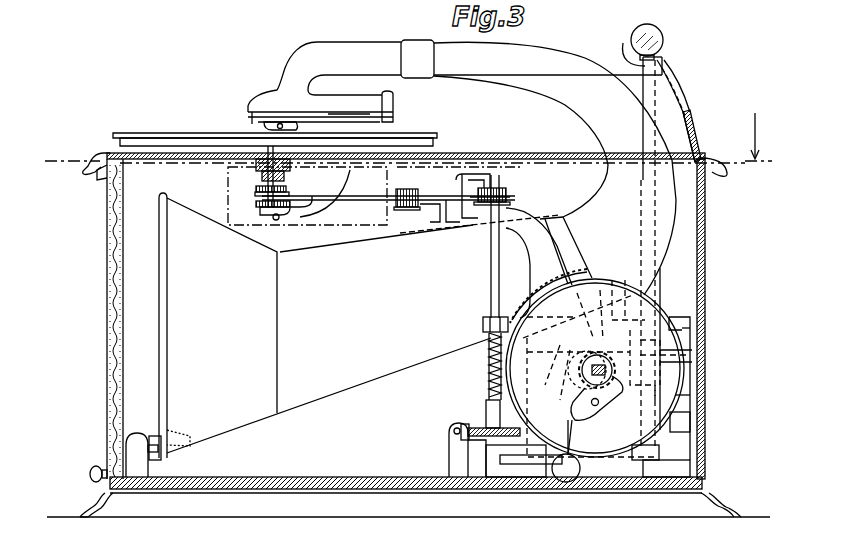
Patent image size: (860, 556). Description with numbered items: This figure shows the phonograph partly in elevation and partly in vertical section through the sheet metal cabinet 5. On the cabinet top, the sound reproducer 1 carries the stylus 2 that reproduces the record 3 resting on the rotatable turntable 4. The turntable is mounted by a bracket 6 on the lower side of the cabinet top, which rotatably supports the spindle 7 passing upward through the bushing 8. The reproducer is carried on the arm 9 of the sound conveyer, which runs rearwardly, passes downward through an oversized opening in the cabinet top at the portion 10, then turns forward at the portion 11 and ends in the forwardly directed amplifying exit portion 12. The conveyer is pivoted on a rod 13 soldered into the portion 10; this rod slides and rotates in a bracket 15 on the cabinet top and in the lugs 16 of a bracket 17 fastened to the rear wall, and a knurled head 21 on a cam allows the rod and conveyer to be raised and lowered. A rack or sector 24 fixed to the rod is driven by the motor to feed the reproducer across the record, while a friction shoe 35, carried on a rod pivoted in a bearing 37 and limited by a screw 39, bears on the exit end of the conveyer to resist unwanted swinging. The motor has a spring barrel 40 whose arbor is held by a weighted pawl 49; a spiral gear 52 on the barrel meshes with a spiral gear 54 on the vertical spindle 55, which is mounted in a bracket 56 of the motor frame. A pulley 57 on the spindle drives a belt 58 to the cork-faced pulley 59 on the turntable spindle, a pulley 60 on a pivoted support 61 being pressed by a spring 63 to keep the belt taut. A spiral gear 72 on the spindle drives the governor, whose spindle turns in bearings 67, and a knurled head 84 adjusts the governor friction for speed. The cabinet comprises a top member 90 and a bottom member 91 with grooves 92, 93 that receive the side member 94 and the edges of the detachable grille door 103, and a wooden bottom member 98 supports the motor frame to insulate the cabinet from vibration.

The sound reproducer 1 is at (248, 104).
The stylus 2 is at (263, 126).
The record 3 is at (148, 133).
The turntable 4 is at (401, 141).
The cabinet 5 is at (492, 153).
The bracket 6 is at (262, 210).
The spindle 7 is at (268, 182).
The bushing 8 is at (258, 170).
The arm of the sound conveyer 9 is at (432, 40).
The downwardly extending portion of the sound conveyer 10 is at (702, 168).
The forwardly directed portion of the sound conveyer 11 is at (382, 376).
The amplifying exit portion 12 is at (248, 419).
The rod 13 is at (633, 26).
The bracket 15 is at (690, 100).
The lugs 16 is at (682, 318).
The bracket 17 is at (692, 418).
The knurled head 21 is at (664, 38).
The rack or sector 24 is at (606, 368).
The friction shoe 35 is at (176, 428).
The bearing 37 is at (118, 450).
The screw 39 is at (167, 452).
The spring barrel 40 is at (692, 357).
The weighted pawl 49 is at (618, 380).
The spiral gear 52 is at (596, 276).
The spiral gear 54 is at (488, 368).
The vertical spindle 55 is at (491, 292).
The bracket 56 is at (528, 219).
The pulley 57 is at (505, 188).
The belt 58 is at (372, 200).
The pulley 59 is at (258, 196).
The pulley 60 is at (406, 190).
The support 61 is at (424, 204).
The spring 63 is at (462, 226).
The bearings 67 is at (449, 449).
The spiral gear 72 is at (484, 424).
The knurled head 84 is at (574, 482).
The top member 90 is at (100, 140).
The bottom member 91 is at (88, 519).
The groove 92 is at (97, 178).
The groove 93 is at (92, 500).
The side member 94 is at (706, 459).
The bottom member 98 is at (688, 496).
The detachable door 103 is at (113, 302).